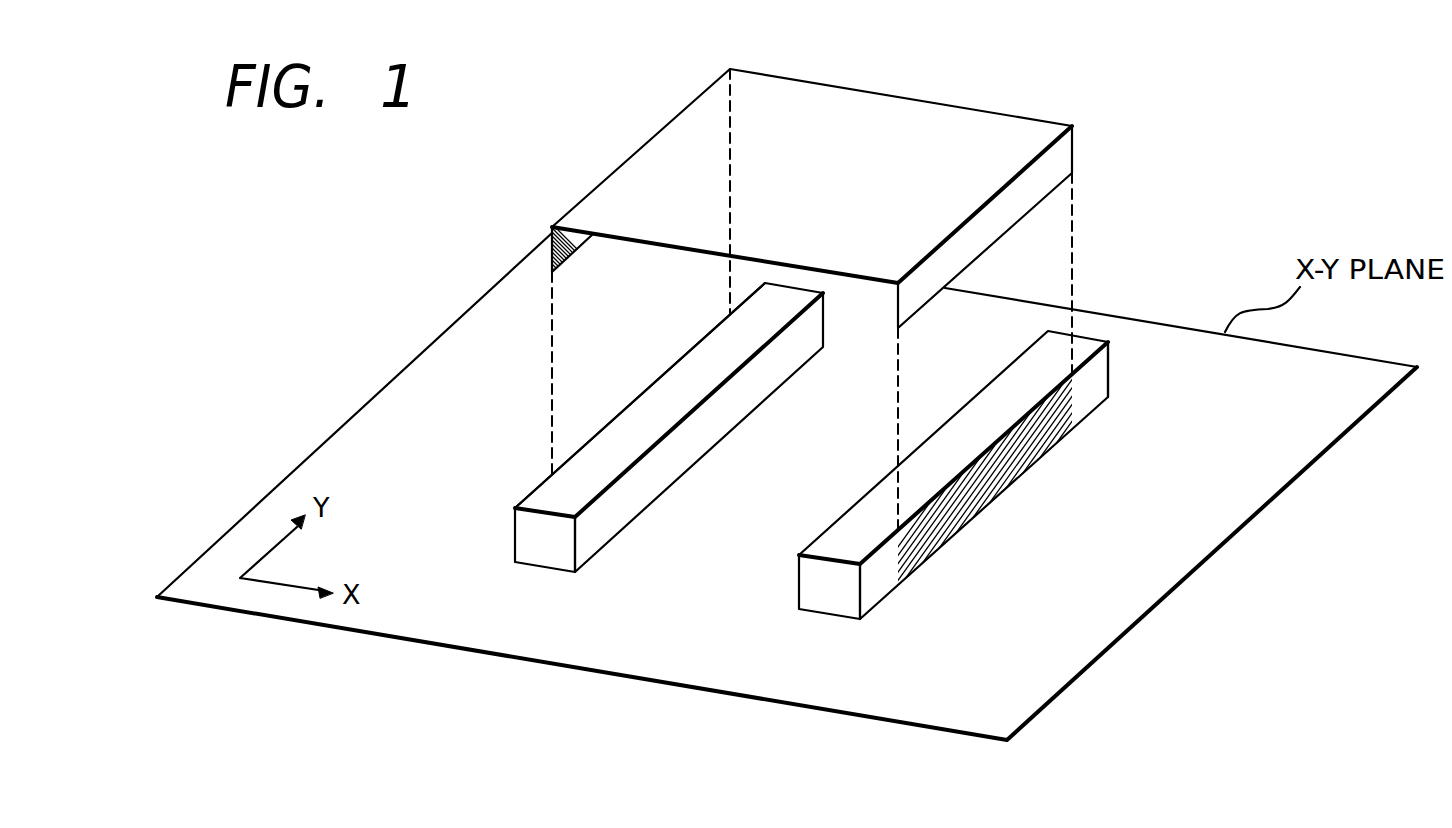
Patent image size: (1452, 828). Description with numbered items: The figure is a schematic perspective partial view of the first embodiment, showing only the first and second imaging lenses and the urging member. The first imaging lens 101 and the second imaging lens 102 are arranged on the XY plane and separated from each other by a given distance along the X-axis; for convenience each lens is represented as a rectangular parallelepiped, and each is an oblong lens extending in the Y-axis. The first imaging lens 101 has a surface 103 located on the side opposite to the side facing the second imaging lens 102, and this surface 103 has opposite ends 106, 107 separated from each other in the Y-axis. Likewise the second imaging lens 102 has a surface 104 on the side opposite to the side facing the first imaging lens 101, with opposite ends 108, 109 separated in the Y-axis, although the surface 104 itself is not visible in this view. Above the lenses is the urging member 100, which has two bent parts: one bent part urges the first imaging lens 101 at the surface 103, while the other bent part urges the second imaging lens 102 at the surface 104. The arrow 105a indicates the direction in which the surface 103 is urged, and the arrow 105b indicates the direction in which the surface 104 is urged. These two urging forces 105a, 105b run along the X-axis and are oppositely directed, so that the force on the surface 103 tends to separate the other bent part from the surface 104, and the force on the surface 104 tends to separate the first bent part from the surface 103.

The urging member 100 is at (1073, 153).
The first imaging lens 101 is at (1108, 378).
The second imaging lens 102 is at (636, 461).
The surface 103 is at (1029, 508).
The surface 104 is at (541, 482).
The arrow 105a is at (803, 62).
The arrow 105b is at (1064, 107).
The end 106 is at (1095, 396).
The end 107 is at (880, 582).
The end 108 is at (750, 289).
The end 109 is at (520, 497).